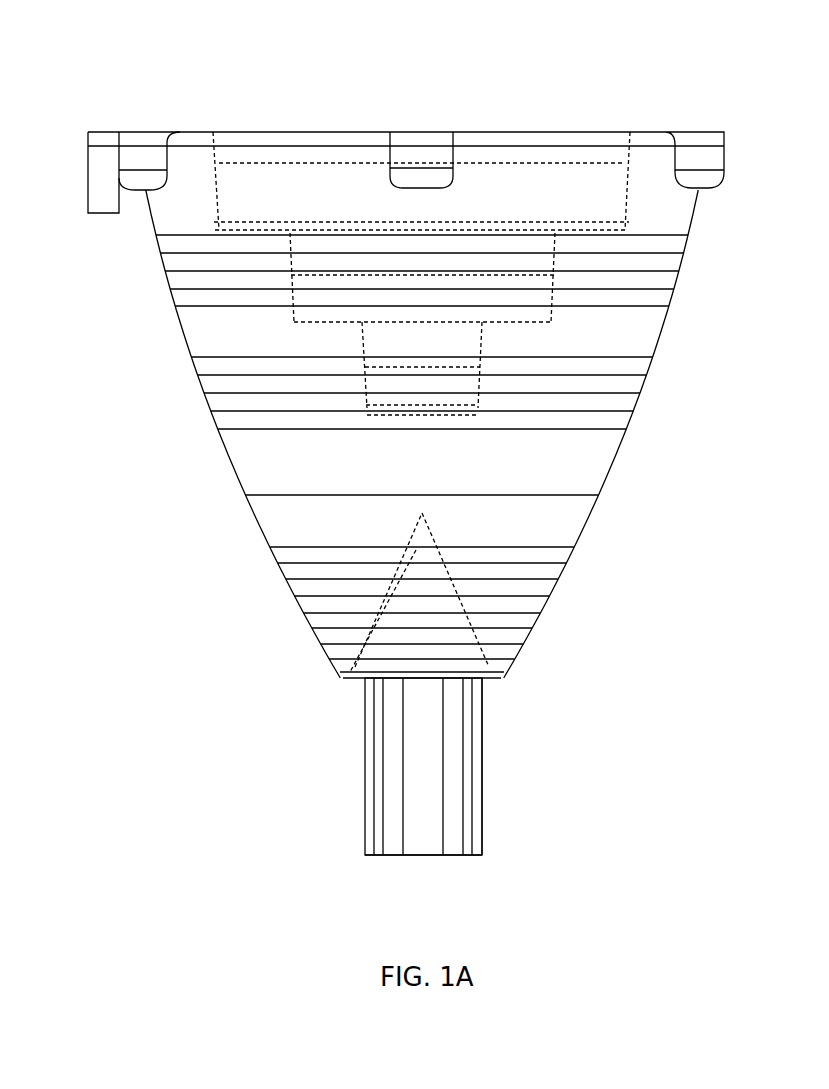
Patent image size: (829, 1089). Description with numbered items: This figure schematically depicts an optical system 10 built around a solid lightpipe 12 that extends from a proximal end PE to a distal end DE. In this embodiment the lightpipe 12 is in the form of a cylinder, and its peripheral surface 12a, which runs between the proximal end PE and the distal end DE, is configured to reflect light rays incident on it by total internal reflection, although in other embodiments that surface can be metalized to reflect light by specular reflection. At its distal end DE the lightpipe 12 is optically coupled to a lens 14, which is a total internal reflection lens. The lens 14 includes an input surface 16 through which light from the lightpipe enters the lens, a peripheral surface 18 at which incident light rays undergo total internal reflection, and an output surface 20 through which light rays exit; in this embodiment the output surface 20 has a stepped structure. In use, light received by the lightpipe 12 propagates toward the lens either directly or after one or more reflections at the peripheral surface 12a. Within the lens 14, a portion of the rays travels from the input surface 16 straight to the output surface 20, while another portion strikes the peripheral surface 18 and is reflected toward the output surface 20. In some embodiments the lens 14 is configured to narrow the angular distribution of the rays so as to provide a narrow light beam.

The optical system 10 is at (120, 54).
The solid lightpipe 12 is at (365, 833).
The peripheral surface 12a is at (482, 805).
The lens 14 is at (205, 410).
The input surface 16 is at (372, 621).
The peripheral surface 18 is at (240, 493).
The output surface 20 is at (651, 132).
The distal end DE is at (503, 681).
The proximal end PE is at (455, 856).